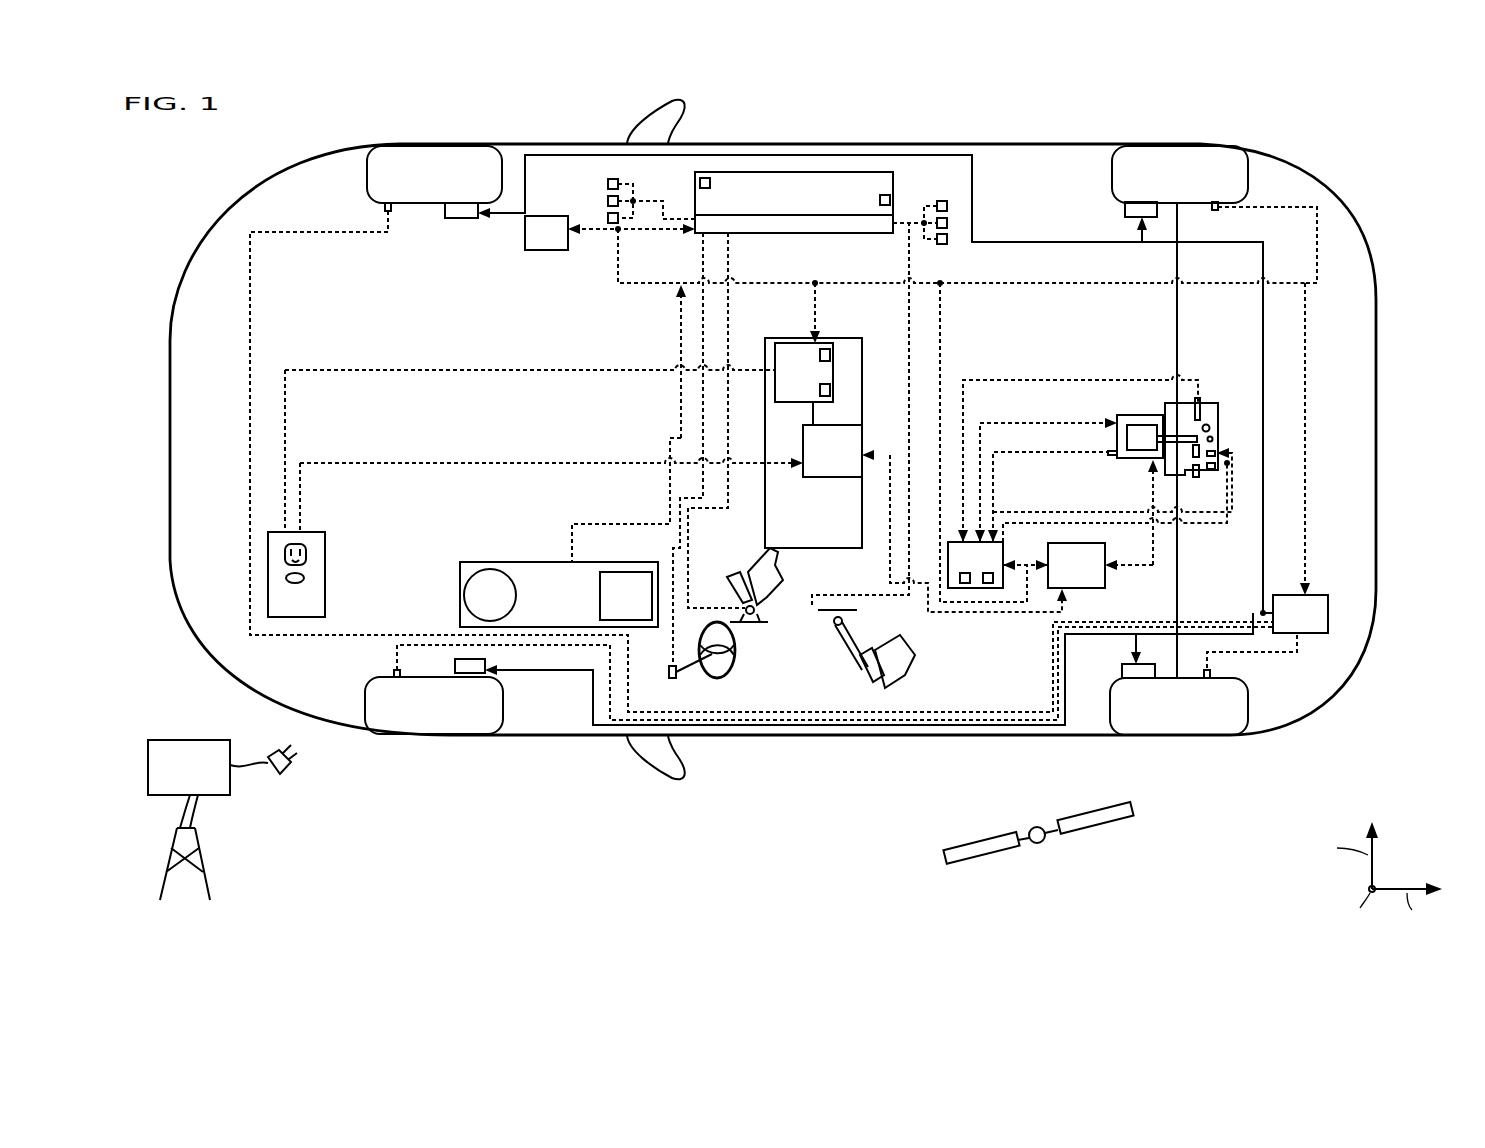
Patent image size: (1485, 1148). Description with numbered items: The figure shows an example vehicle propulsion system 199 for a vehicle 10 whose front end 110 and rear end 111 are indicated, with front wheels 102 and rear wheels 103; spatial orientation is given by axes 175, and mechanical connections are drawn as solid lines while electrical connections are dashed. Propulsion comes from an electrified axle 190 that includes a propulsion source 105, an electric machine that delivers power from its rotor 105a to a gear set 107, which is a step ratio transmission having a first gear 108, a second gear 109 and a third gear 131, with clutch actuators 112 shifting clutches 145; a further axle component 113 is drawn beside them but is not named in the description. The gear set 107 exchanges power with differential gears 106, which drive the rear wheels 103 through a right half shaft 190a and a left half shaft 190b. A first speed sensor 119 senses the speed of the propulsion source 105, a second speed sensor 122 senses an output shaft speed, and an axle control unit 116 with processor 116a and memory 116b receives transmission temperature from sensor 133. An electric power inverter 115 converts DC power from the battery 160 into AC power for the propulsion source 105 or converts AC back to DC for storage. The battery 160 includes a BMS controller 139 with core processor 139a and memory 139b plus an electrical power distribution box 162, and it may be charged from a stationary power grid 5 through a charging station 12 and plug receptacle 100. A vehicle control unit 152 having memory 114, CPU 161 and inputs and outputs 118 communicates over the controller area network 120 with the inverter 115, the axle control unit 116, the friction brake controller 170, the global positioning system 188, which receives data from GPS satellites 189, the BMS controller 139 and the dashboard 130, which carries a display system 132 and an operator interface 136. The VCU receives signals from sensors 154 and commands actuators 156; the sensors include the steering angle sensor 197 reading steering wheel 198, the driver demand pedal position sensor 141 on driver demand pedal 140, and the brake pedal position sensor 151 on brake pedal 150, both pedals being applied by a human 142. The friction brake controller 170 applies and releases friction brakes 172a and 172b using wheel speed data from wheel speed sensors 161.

The stationary power grid 5 is at (208, 888).
The vehicle 10 is at (1000, 143).
The charging station 12 is at (222, 767).
The plug receptacle 100 is at (325, 597).
The front wheels 102 is at (438, 155).
The rear wheels 103 is at (1178, 146).
The propulsion source 105 is at (1118, 463).
The rotor 105a is at (1118, 416).
The differential gears 106 is at (1181, 403).
The gear set 107 is at (1208, 424).
The first gear 108 is at (1212, 436).
The second gear 109 is at (1215, 451).
The front end 110 is at (133, 233).
The rear end 111 is at (1424, 174).
The clutch actuators 112 is at (1217, 465).
The transmission actuator 113 is at (1216, 462).
The memory 114 is at (700, 180).
The electric power inverter 115 is at (1076, 565).
The axle control unit 116 is at (975, 565).
The processor 116a is at (962, 588).
The memory 116b is at (990, 588).
The inputs and outputs 118 is at (838, 225).
The first speed sensor 119 is at (1124, 459).
The controller area network 120 is at (803, 292).
The second speed sensor 122 is at (1200, 400).
The dashboard 130 is at (475, 563).
The third gear 131 is at (1192, 437).
The display system 132 is at (490, 595).
The sensor 133 is at (1195, 460).
The operator interface 136 is at (626, 596).
The BMS controller 139 is at (804, 384).
The core processor 139a is at (825, 349).
The memory 139b is at (828, 384).
The driver demand pedal 140 is at (735, 595).
The driver demand pedal position sensor 141 is at (756, 610).
The human 142 is at (763, 560).
The clutches 145 is at (1198, 470).
The brake pedal 150 is at (864, 673).
The brake pedal position sensor 151 is at (830, 633).
The vehicle control unit 152 is at (794, 193).
The sensors 154 is at (596, 206).
The actuators 156 is at (953, 243).
The battery 160 is at (813, 443).
The wheel speed sensors 161 is at (385, 207).
The electrical power distribution box 162 is at (832, 451).
The friction brake controller 170 is at (789, 440).
The friction brakes 172a is at (457, 216).
The friction brakes 172b is at (1122, 210).
The axes 175 is at (1400, 838).
The global positioning system 188 is at (610, 233).
The GPS satellites 189 is at (1082, 831).
The electrified axle 190 is at (1146, 368).
The right half shaft 190a is at (1178, 333).
The left half shaft 190b is at (1177, 590).
The steering angle sensor 197 is at (666, 672).
The steering wheel 198 is at (740, 666).
The vehicle propulsion system 199 is at (932, 110).